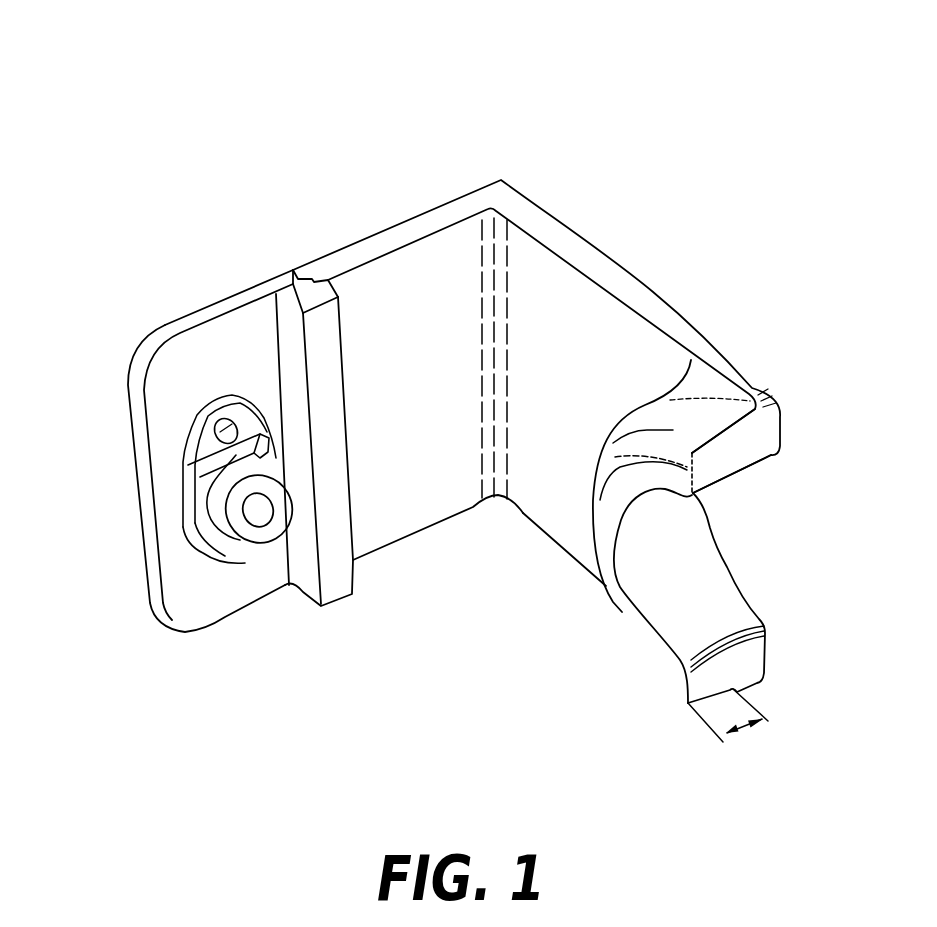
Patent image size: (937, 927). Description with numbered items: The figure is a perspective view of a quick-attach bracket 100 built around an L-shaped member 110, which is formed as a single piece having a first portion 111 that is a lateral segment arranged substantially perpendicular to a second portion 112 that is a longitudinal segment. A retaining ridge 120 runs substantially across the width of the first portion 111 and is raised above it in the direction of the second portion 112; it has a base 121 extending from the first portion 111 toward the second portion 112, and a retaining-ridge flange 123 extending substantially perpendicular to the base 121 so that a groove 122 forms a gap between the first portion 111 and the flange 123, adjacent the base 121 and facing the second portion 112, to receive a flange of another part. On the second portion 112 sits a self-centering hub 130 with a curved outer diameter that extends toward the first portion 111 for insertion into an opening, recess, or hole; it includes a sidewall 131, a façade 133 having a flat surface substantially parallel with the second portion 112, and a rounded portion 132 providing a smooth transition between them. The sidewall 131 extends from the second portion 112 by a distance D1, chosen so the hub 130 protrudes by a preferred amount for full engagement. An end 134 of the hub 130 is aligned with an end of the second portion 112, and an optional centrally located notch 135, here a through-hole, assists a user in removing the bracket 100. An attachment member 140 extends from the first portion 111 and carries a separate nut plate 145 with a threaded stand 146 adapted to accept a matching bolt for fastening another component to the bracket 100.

The quick-attach bracket 100 is at (158, 84).
The L-shaped member 110 is at (557, 229).
The first portion 111 is at (420, 495).
The second portion 112 is at (538, 502).
The retaining ridge 120 is at (336, 586).
The base 121 is at (293, 284).
The groove 122 is at (307, 264).
The retaining-ridge flange 123 is at (328, 292).
The self-centering hub 130 is at (642, 637).
The sidewall 131 is at (658, 415).
The rounded portion 132 is at (677, 430).
The façade 133 is at (705, 458).
The end 134 is at (745, 453).
The notch 135 is at (752, 547).
The attachment member 140 is at (147, 350).
The nut plate 145 is at (156, 511).
The threaded stand 146 is at (262, 513).
The distance D1 is at (728, 726).